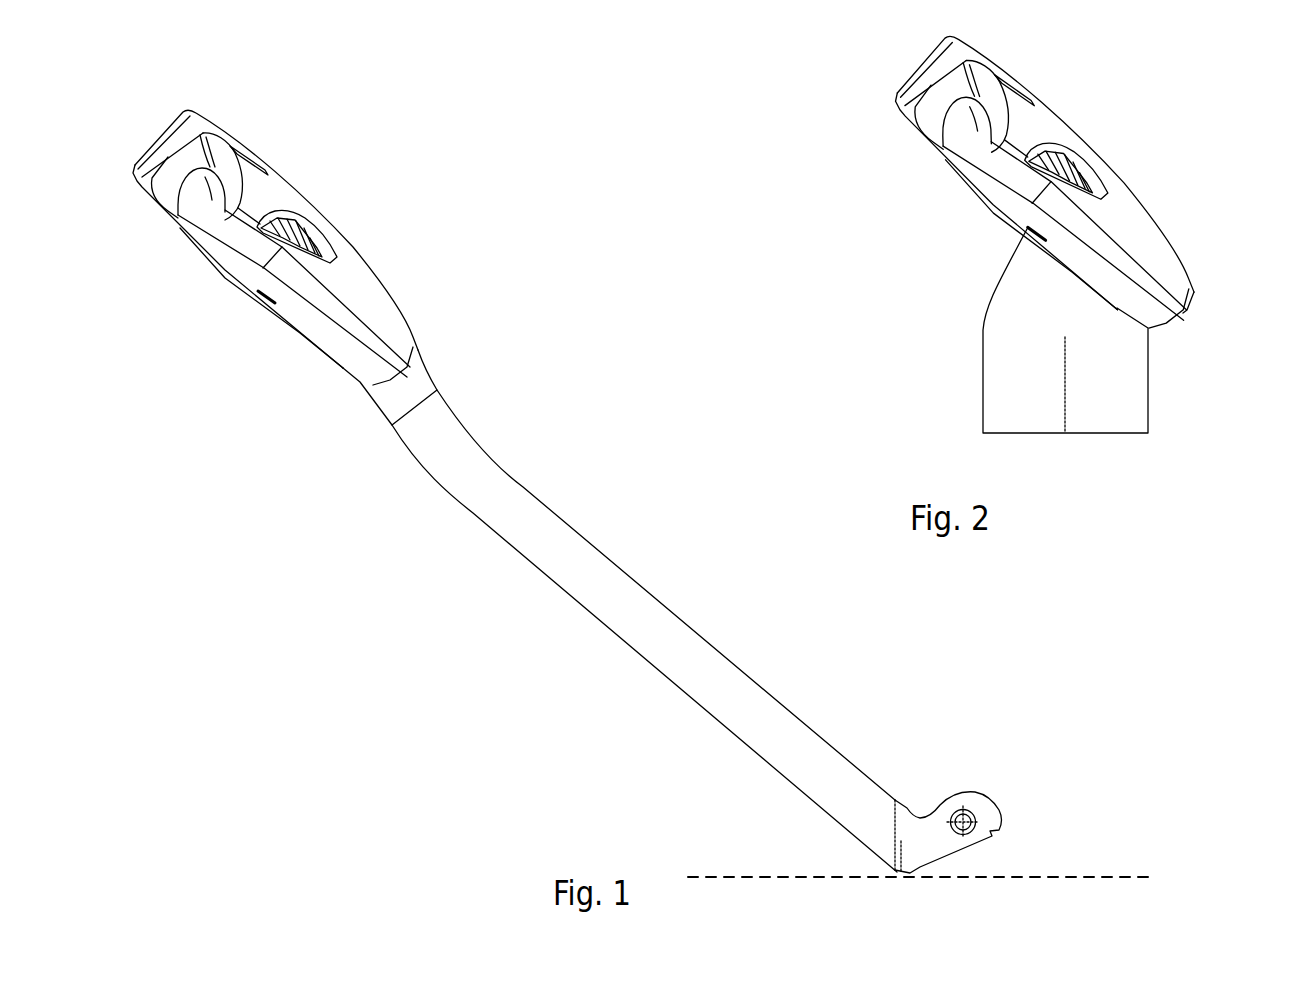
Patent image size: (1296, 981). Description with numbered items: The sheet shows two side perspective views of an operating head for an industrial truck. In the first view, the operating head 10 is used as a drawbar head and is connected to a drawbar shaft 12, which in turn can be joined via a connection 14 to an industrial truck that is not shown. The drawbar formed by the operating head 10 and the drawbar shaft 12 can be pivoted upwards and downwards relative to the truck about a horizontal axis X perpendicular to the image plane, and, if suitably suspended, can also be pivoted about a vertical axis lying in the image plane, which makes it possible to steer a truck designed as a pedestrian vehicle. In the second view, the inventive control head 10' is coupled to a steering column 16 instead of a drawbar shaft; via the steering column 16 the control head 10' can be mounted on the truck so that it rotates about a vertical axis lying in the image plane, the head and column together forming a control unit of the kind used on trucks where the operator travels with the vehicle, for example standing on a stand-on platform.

In FIG. 1, the operating head 10 is at (322, 247).
In FIG. 2, the control head 10' is at (1066, 181).
In FIG. 1, the drawbar shaft 12 is at (520, 513).
In FIG. 1, the connection 14 is at (983, 805).
In FIG. 2, the steering column 16 is at (993, 374).
In FIG. 1, the horizontal axis X is at (757, 877).